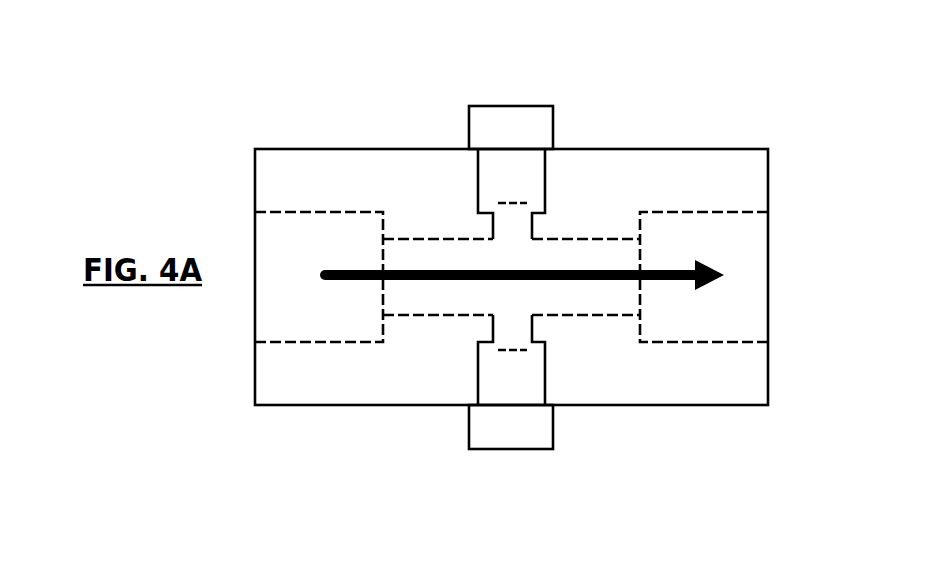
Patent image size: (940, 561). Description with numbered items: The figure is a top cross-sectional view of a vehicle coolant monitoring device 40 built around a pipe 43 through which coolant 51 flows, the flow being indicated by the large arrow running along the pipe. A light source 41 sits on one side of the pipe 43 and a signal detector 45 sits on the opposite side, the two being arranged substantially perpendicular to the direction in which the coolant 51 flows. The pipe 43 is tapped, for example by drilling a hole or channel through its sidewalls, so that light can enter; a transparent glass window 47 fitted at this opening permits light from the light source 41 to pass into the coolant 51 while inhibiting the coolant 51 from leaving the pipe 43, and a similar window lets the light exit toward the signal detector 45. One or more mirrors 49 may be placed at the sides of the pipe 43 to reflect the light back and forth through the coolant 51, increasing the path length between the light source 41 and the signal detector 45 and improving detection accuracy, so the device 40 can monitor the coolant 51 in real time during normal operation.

The vehicle coolant monitoring device 40 is at (218, 111).
The light source 41 is at (516, 104).
The pipe 43 is at (707, 338).
The signal detector 45 is at (482, 452).
The transparent glass window 47 is at (512, 203).
The mirror 49 is at (517, 350).
The coolant 51 is at (333, 280).